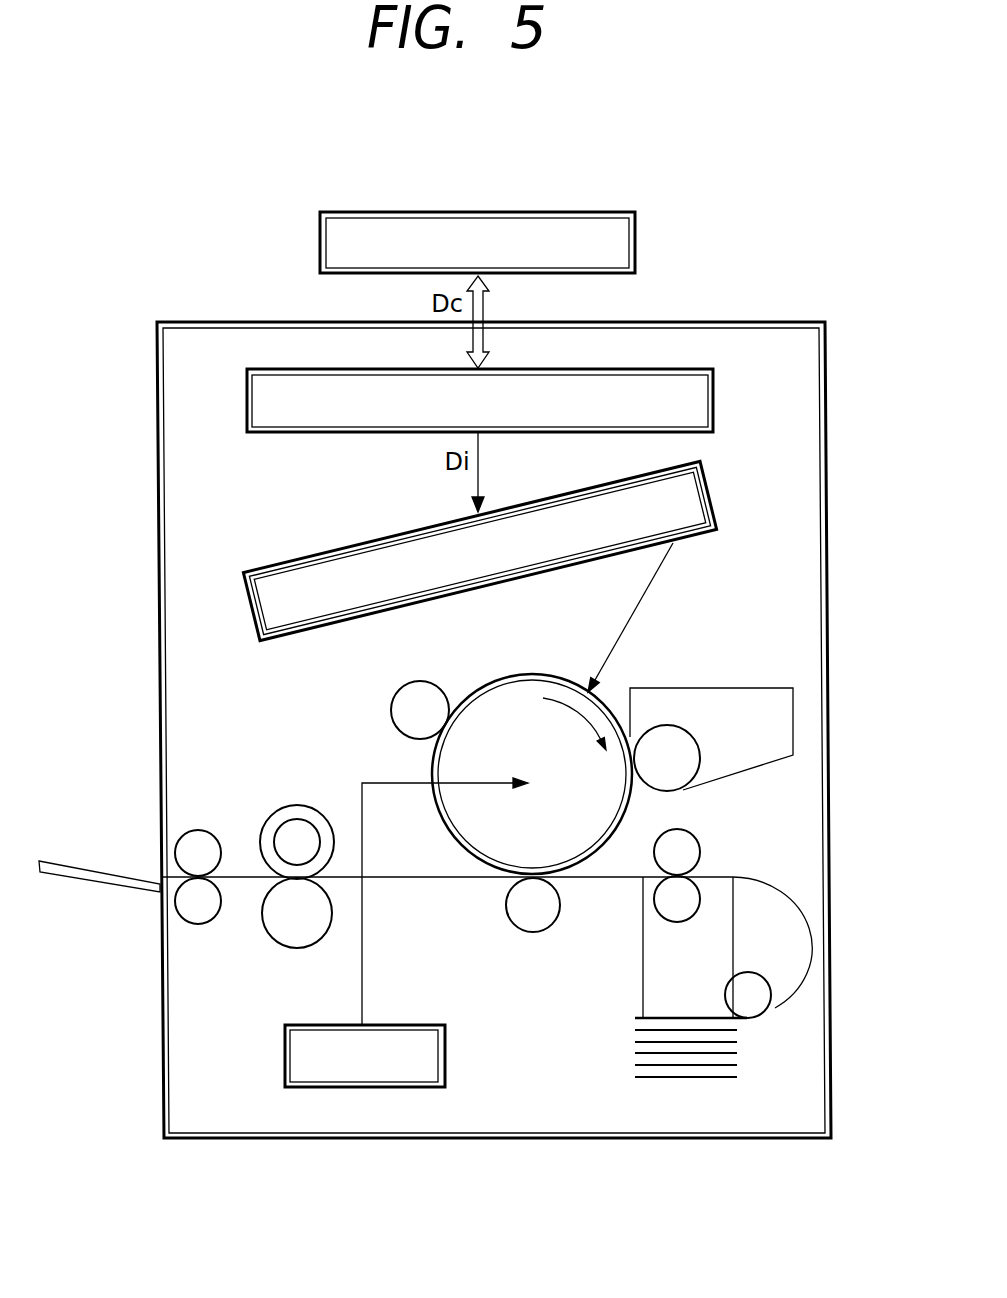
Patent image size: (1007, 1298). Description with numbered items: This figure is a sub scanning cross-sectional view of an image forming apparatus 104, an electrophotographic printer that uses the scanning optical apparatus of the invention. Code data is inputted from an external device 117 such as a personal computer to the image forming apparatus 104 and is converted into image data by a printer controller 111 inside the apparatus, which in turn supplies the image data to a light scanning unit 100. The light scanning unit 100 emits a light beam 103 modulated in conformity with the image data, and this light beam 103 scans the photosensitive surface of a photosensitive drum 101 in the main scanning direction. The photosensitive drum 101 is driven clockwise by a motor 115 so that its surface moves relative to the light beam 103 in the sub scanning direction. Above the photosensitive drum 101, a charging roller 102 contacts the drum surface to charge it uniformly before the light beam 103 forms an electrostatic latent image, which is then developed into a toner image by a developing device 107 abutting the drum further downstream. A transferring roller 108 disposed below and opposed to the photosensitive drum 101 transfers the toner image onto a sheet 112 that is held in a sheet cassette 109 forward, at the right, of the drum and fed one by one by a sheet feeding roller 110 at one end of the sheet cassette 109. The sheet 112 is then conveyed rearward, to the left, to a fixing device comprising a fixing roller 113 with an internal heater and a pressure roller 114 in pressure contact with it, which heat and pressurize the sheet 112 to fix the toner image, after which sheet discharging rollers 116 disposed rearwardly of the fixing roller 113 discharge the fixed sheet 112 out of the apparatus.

The light scanning unit 100 is at (713, 472).
The photosensitive drum 101 is at (632, 805).
The charging roller 102 is at (397, 688).
The light beam 103 is at (652, 590).
The image forming apparatus 104 is at (790, 320).
The developing device 107 is at (723, 688).
The transferring roller 108 is at (542, 933).
The sheet cassette 109 is at (628, 1048).
The sheet feeding roller 110 is at (733, 980).
The printer controller 111 is at (693, 368).
The sheet 112 is at (435, 877).
The fixing roller 113 is at (298, 807).
The pressure roller 114 is at (287, 950).
The motor 115 is at (417, 1023).
The sheet discharging rollers 116 is at (193, 830).
The external device 117 is at (610, 210).